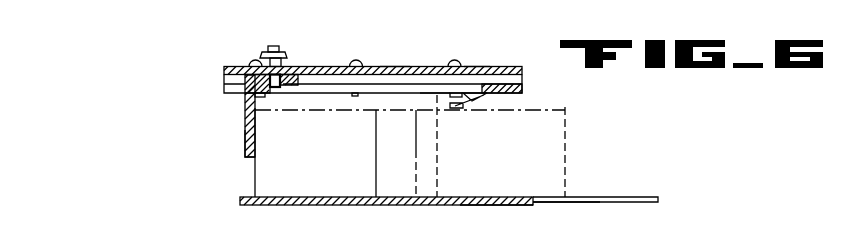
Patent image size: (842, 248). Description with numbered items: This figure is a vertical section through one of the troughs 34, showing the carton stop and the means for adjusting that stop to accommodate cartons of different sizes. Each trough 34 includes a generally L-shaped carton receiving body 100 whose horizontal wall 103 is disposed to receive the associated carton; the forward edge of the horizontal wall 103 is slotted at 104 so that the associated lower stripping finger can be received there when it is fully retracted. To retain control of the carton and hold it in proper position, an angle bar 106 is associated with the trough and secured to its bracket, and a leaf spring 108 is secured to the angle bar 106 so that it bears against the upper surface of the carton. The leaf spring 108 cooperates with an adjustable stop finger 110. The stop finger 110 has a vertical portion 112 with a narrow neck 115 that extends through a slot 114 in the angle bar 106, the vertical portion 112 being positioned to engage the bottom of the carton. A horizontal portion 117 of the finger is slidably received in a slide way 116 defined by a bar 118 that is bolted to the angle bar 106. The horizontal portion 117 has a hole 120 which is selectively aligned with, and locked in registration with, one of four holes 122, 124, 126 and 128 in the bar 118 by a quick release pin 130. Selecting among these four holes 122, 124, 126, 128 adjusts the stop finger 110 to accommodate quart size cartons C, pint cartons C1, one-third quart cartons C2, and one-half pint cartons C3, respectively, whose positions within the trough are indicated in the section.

The trough 34 is at (634, 187).
The carton receiving body 100 is at (338, 207).
The horizontal wall 103 is at (483, 204).
The slot 104 is at (582, 203).
The angle bar 106 is at (522, 85).
The leaf spring 108 is at (467, 104).
The adjustable stop finger 110 is at (247, 125).
The vertical portion 112 is at (248, 143).
The slot 114 is at (433, 88).
The narrow neck 115 is at (223, 92).
The slide way 116 is at (318, 82).
The horizontal portion 117 is at (302, 69).
The bar 118 is at (223, 70).
The hole 120 is at (289, 86).
The hole 122 is at (295, 66).
The hole 124 is at (396, 66).
The hole 126 is at (437, 66).
The hole 128 is at (468, 66).
The quick release pin 130 is at (275, 45).
The quart size carton C is at (253, 177).
The pint carton C1 is at (376, 183).
The one-third quart carton C2 is at (416, 162).
The one-half pint carton C3 is at (437, 131).